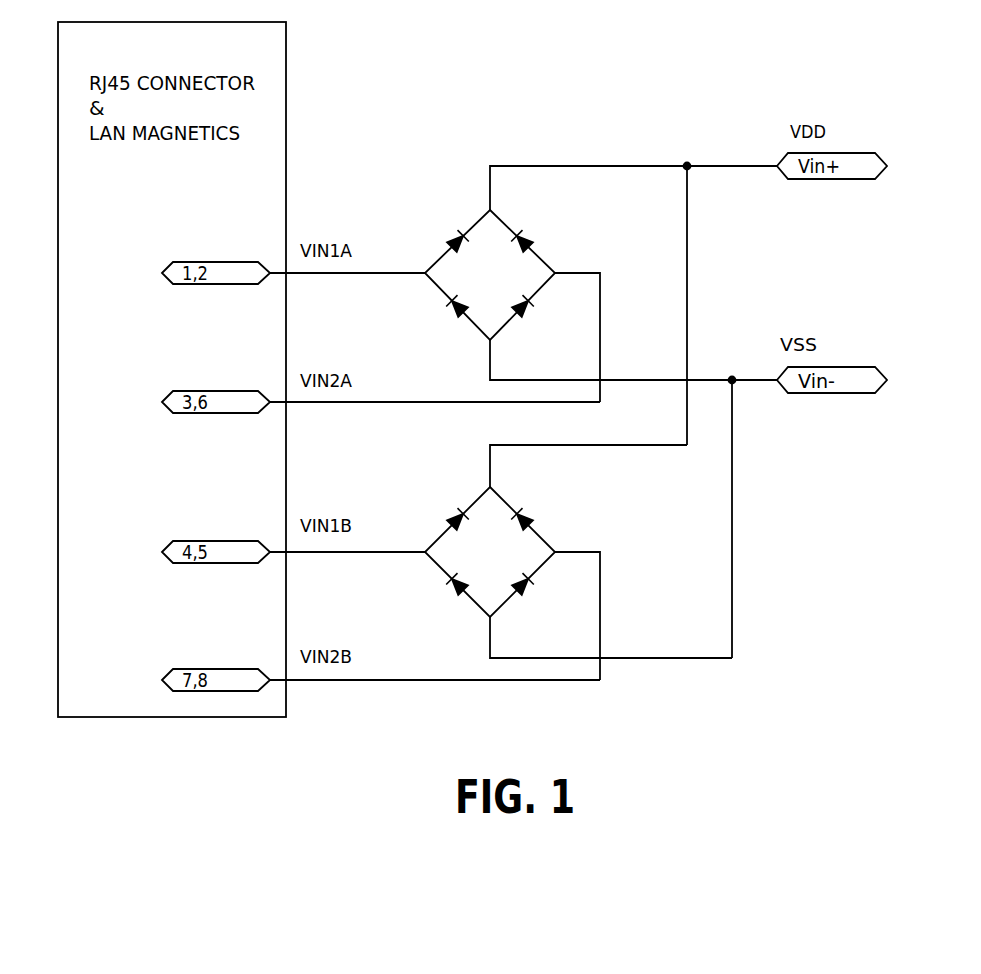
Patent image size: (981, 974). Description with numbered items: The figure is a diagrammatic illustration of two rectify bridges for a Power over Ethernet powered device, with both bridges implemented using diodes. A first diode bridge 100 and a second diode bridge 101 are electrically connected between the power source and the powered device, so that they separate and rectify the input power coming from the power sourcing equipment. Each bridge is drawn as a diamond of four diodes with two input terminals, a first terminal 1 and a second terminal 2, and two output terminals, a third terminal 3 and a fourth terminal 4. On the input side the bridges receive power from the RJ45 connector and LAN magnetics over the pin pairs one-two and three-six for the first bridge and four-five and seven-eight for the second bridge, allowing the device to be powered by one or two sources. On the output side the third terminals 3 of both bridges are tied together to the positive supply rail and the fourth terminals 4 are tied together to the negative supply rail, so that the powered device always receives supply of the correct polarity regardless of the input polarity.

The diode bridge DB100 100 is at (520, 264).
The diode bridge DB101 101 is at (520, 540).
The bridge AC input pin 1 is at (578, 464).
The bridge AC input pin 2 is at (402, 399).
The bridge positive output pin 3 is at (625, 326).
The bridge negative output pin 4 is at (625, 499).